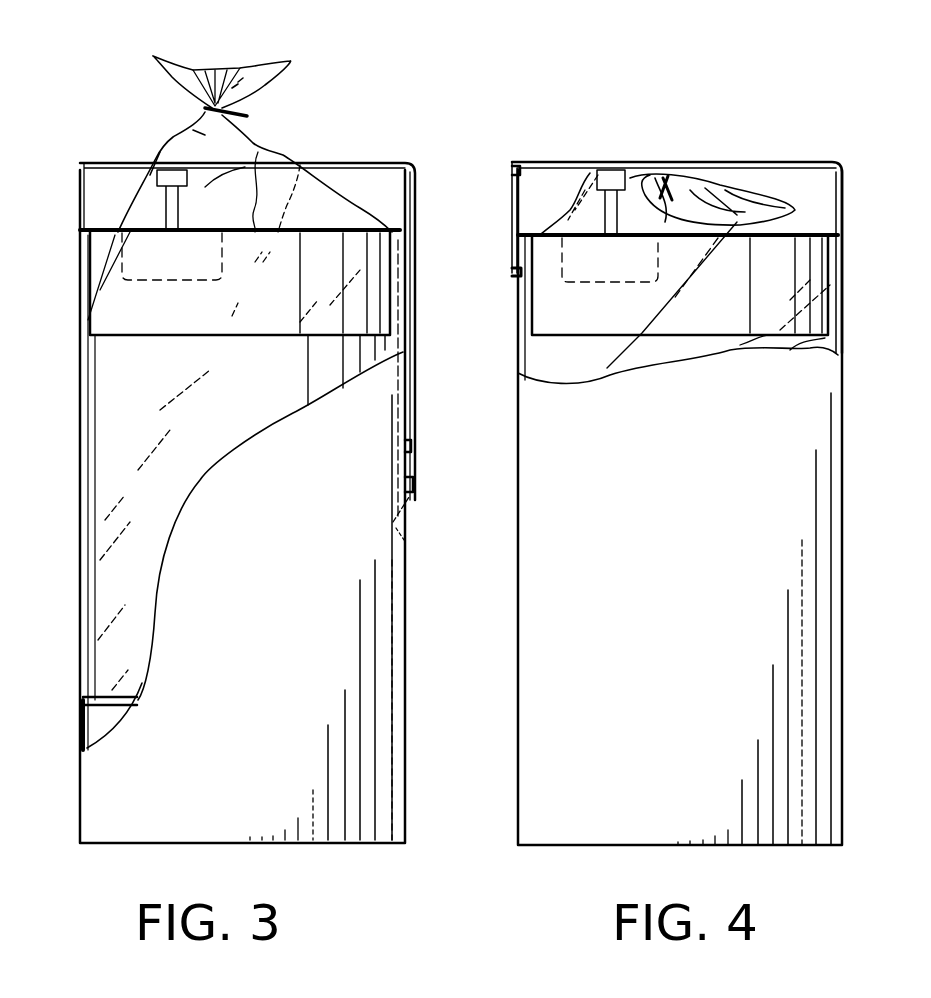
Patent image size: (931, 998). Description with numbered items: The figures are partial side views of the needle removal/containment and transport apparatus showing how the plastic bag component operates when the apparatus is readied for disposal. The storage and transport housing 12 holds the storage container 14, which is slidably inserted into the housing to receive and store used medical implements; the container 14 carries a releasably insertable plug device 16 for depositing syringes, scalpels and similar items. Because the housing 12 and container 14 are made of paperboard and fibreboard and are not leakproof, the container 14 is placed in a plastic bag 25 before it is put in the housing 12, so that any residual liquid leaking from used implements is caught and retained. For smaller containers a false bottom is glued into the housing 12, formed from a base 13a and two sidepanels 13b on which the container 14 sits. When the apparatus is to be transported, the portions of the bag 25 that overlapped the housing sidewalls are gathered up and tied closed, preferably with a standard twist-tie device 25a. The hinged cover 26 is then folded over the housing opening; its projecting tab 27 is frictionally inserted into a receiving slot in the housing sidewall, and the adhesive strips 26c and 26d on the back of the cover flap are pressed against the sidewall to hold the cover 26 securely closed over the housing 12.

In FIG. 3, the storage and transport housing 12 is at (380, 723).
In FIG. 4, the storage and transport housing 12 is at (535, 750).
In FIG. 3, the base 13a is at (105, 713).
In FIG. 3, the sidepanels 13b is at (87, 717).
In FIG. 3, the storage container 14 is at (125, 428).
In FIG. 4, the storage container 14 is at (807, 307).
In FIG. 3, the plug device 16 is at (148, 260).
In FIG. 3, the plastic bag 25 is at (265, 147).
In FIG. 4, the plastic bag 25 is at (637, 180).
In FIG. 3, the twist-tie device 25a is at (242, 113).
In FIG. 3, the cover 26 is at (418, 287).
In FIG. 4, the cover 26 is at (732, 160).
In FIG. 3, the adhesive strip 26c is at (418, 483).
In FIG. 4, the adhesive strip 26c is at (515, 257).
In FIG. 3, the adhesive strip 26d is at (413, 460).
In FIG. 4, the adhesive strip 26d is at (520, 160).
In FIG. 3, the projecting tab 27 is at (410, 503).